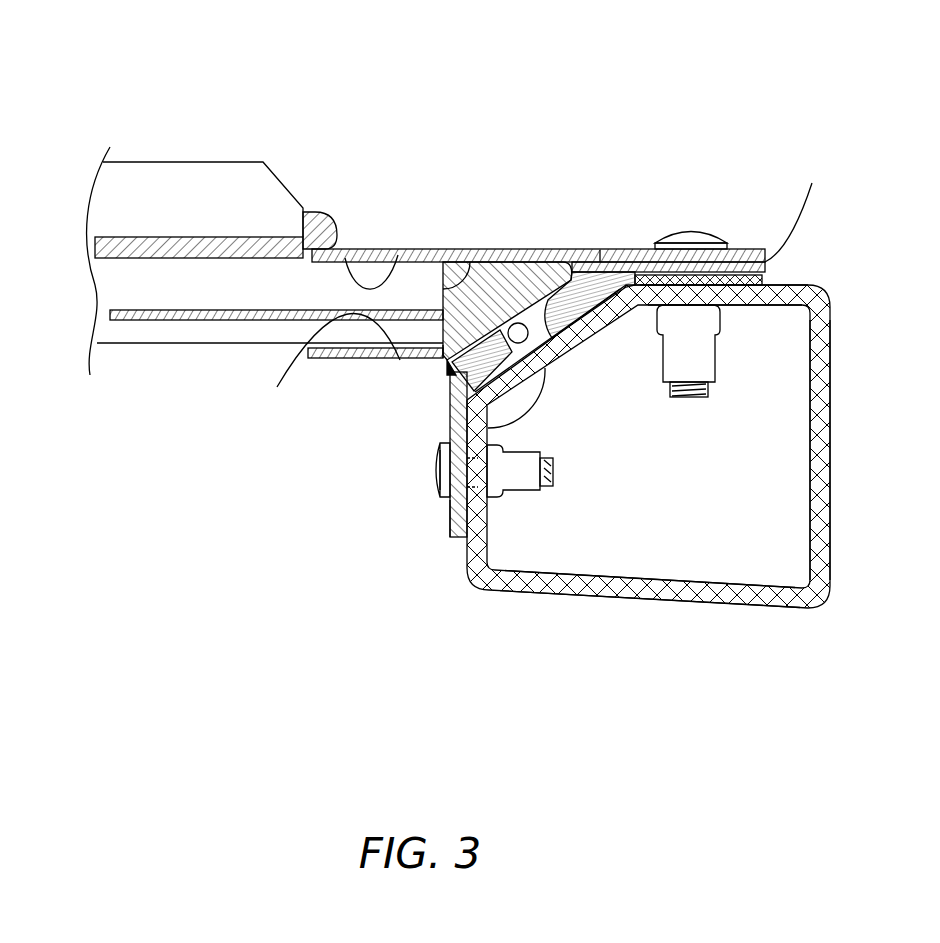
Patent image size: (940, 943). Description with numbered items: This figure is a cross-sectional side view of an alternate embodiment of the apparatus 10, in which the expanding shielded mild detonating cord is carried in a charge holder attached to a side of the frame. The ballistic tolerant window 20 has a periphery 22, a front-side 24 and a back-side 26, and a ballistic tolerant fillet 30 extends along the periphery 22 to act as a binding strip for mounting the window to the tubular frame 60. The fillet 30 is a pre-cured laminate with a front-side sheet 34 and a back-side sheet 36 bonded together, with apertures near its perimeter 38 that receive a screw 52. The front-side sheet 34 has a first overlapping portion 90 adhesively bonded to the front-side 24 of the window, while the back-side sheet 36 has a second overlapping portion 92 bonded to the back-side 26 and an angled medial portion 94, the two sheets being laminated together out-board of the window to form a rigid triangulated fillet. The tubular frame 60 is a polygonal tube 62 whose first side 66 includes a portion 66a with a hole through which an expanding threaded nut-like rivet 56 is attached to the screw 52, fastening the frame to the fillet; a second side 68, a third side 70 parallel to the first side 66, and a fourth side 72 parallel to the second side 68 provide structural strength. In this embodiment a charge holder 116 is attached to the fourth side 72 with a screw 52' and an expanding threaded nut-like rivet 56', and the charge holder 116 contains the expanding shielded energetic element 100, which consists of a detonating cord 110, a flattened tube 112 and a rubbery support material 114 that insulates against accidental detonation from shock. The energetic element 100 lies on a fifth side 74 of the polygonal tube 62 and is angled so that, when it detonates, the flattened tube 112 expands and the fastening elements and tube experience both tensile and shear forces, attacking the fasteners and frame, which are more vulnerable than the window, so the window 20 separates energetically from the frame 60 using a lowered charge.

The apparatus 10 is at (802, 87).
The ballistic tolerant window 20 is at (128, 380).
The periphery 22 is at (468, 262).
The front-side 24 is at (347, 257).
The back-side 26 is at (305, 350).
The ballistic tolerant fillet 30 is at (548, 227).
The front-side sheet 34 is at (600, 250).
The back-side sheet 36 is at (607, 278).
The perimeter 38 is at (712, 204).
The screw 52 is at (672, 176).
The screw 52' is at (400, 481).
The expanding threaded nut-like rivet 56 is at (648, 352).
The expanding threaded nut-like rivet 56' is at (527, 492).
The tubular frame 60 is at (858, 320).
The polygonal tube 62 is at (690, 457).
The first side 66 is at (772, 287).
The portion 66a is at (655, 283).
The second side 68 is at (823, 432).
The third side 70 is at (680, 613).
The fourth side 72 is at (462, 537).
The fifth side 74 is at (435, 455).
The first overlapping portion 90 is at (410, 248).
The second overlapping portion 92 is at (347, 358).
The angled medial portion 94 is at (445, 355).
The expanding shielded energetic element 100 is at (453, 372).
The detonating cord 110 is at (518, 323).
The flattened tube 112 is at (558, 290).
The support material 114 is at (452, 380).
The charge holder 116 is at (450, 510).